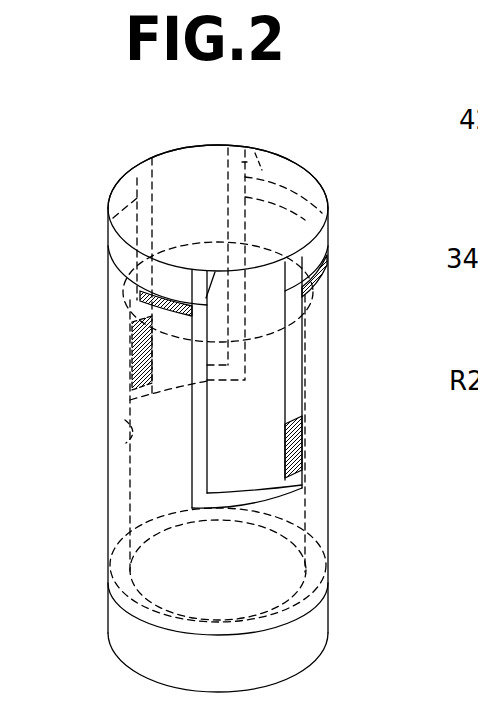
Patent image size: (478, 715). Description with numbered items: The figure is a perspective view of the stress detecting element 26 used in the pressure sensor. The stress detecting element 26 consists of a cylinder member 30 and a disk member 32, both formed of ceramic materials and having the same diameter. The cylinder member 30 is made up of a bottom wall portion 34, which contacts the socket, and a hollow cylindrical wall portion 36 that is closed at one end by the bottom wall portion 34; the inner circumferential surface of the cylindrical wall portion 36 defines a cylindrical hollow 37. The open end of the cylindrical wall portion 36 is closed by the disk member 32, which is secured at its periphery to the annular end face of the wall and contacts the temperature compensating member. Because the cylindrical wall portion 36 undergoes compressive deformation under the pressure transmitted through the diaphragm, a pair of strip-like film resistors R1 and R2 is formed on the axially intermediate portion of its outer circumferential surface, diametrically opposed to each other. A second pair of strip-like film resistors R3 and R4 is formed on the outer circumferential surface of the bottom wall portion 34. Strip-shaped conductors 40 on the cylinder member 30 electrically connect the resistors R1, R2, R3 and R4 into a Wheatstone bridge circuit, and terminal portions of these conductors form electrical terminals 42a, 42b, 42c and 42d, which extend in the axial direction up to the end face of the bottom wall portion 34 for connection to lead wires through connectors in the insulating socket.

The stress detecting element 26 is at (373, 130).
The cylinder member 30 is at (333, 520).
The disk member 32 is at (310, 640).
The bottom wall portion 34 is at (178, 165).
The cylindrical wall portion 36 is at (290, 567).
The cylindrical hollow 37 is at (125, 448).
The conductors 40 is at (192, 450).
The electrical terminal 42a is at (290, 262).
The electrical terminal 42b is at (215, 272).
The electrical terminal 42c is at (262, 155).
The electrical terminal 42d is at (133, 180).
The resistor R1 is at (300, 445).
The resistor R2 is at (125, 368).
The resistor R3 is at (140, 312).
The resistor R4 is at (330, 287).